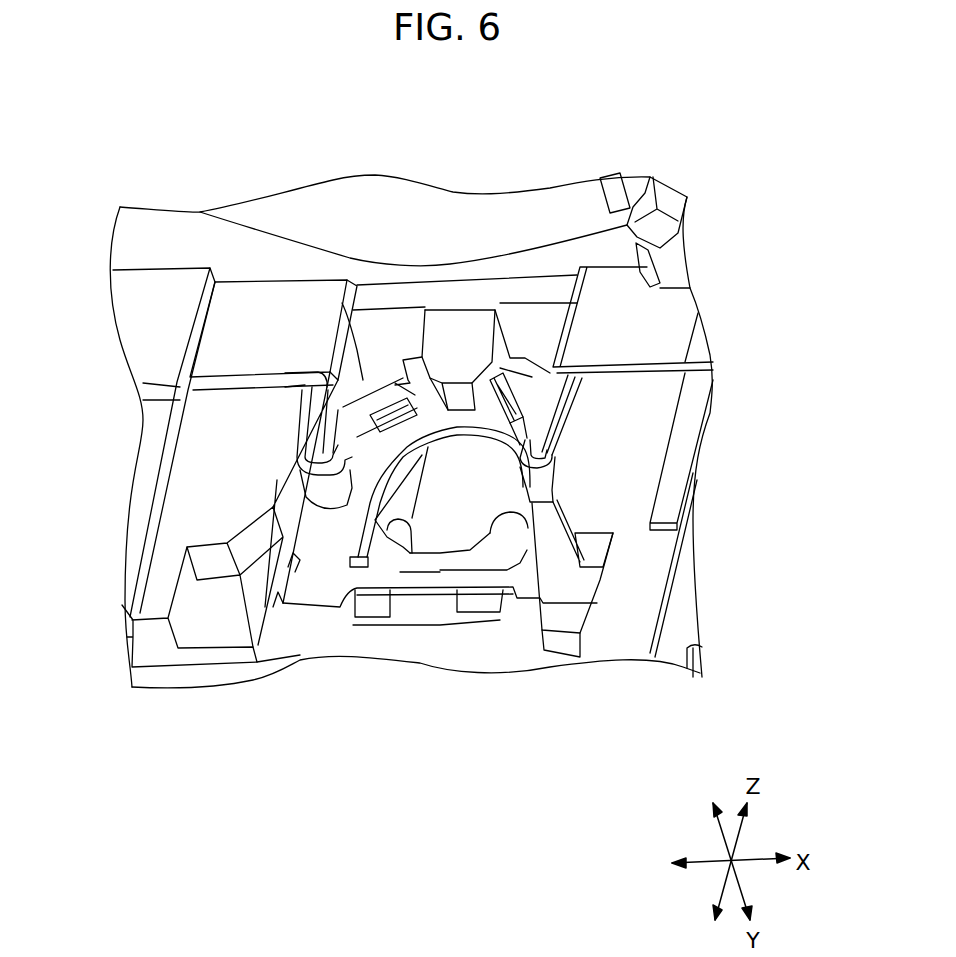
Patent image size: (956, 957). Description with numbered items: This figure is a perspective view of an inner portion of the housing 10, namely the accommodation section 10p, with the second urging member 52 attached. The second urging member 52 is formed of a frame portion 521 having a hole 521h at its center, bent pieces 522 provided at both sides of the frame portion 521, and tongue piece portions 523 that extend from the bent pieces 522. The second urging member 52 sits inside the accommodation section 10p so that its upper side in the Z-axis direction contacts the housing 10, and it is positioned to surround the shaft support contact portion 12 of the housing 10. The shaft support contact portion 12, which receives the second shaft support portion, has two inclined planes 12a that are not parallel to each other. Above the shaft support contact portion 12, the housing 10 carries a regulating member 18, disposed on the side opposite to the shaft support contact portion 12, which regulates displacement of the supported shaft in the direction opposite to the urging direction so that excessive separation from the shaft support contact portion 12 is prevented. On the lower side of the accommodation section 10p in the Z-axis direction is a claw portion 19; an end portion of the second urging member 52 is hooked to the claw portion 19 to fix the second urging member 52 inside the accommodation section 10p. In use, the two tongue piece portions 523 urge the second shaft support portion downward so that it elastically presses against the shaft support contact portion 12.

The housing 10 is at (627, 463).
The accommodation section 10p is at (325, 620).
The shaft support contact portion 12 is at (483, 557).
The inclined planes 12a is at (385, 530).
The regulating member 18 is at (457, 357).
The claw portion 19 is at (437, 617).
The second urging member 52 is at (297, 610).
The frame portion 521 is at (327, 533).
The hole 521h is at (420, 572).
The bent pieces 522 is at (303, 425).
The tongue piece portions 523 is at (392, 390).